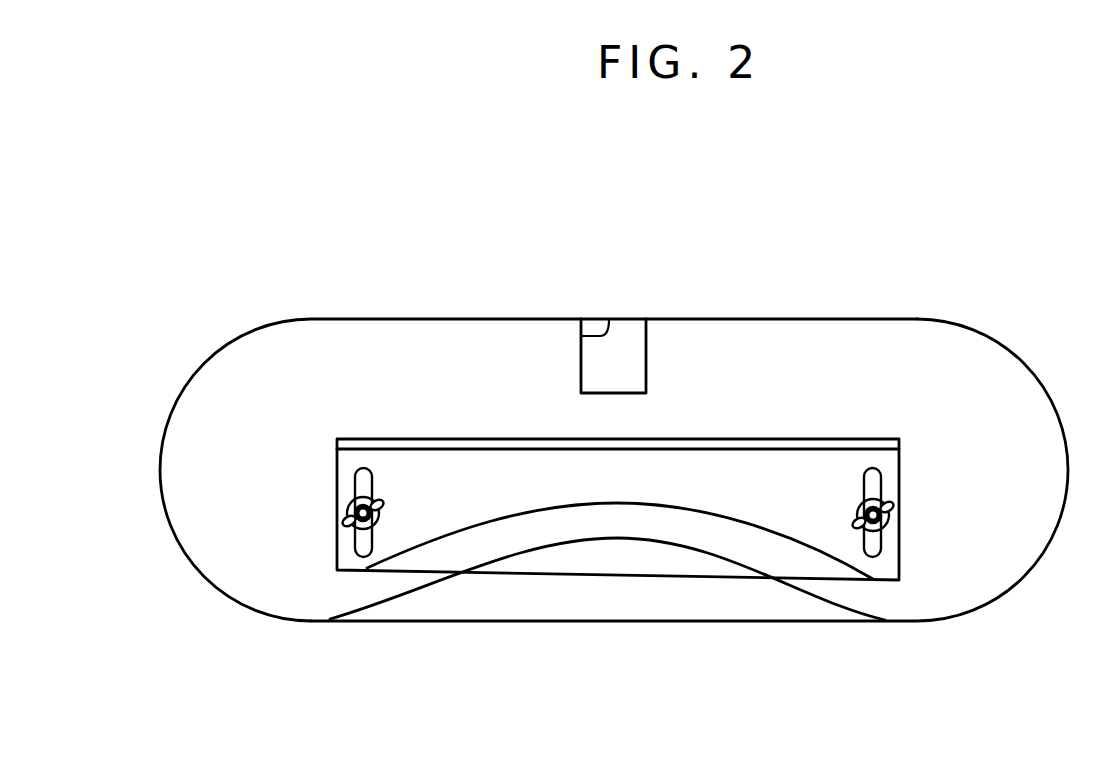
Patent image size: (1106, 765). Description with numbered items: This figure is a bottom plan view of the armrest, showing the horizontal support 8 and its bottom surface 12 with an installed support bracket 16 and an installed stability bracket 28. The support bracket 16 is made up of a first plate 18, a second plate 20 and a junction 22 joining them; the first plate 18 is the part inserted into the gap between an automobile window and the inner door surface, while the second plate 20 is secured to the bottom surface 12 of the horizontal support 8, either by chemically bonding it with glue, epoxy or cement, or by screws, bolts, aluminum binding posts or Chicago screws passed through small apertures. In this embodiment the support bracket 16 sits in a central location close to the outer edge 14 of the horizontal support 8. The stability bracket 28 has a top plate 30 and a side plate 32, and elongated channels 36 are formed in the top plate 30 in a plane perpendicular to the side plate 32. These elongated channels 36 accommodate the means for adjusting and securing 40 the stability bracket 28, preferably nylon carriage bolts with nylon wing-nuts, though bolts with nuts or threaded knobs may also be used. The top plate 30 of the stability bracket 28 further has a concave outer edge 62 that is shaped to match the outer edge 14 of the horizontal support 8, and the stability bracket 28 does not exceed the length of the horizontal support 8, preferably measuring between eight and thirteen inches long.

The horizontal support 8 is at (808, 348).
The bottom surface 12 is at (452, 417).
The outer edge 14 is at (953, 322).
The support bracket 16 is at (633, 345).
The first plate 18 is at (633, 368).
The second plate 20 is at (598, 322).
The junction 22 is at (580, 330).
The stability bracket 28 is at (722, 483).
The top plate 30 is at (653, 483).
The side plate 32 is at (758, 445).
The elongated channels 36 is at (366, 548).
The means for adjusting and securing 40 is at (376, 520).
The concave outer edge 62 is at (578, 508).